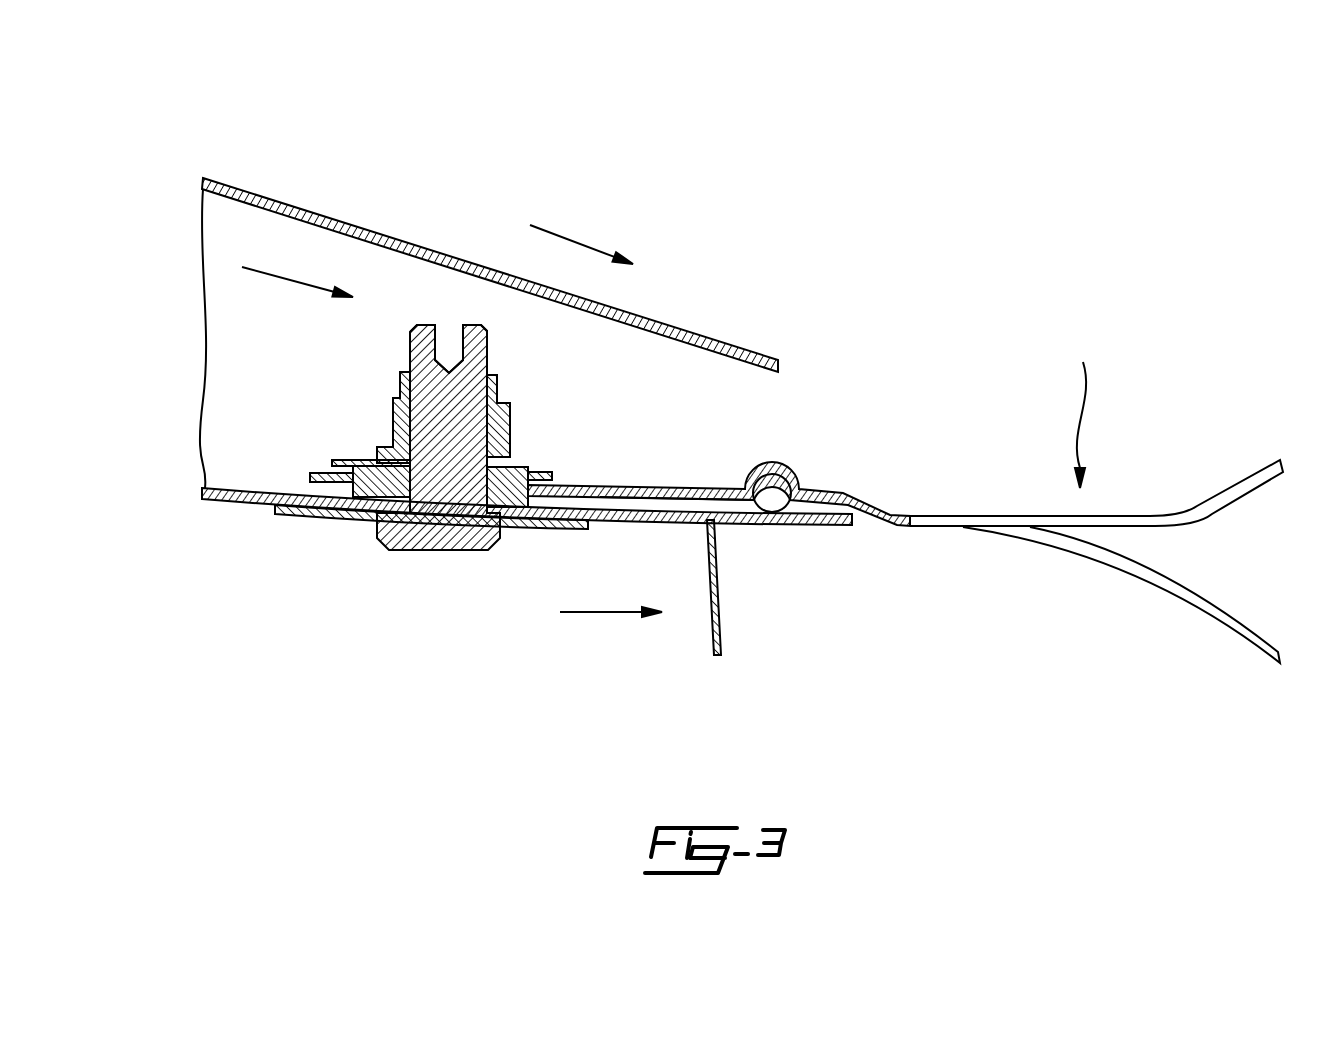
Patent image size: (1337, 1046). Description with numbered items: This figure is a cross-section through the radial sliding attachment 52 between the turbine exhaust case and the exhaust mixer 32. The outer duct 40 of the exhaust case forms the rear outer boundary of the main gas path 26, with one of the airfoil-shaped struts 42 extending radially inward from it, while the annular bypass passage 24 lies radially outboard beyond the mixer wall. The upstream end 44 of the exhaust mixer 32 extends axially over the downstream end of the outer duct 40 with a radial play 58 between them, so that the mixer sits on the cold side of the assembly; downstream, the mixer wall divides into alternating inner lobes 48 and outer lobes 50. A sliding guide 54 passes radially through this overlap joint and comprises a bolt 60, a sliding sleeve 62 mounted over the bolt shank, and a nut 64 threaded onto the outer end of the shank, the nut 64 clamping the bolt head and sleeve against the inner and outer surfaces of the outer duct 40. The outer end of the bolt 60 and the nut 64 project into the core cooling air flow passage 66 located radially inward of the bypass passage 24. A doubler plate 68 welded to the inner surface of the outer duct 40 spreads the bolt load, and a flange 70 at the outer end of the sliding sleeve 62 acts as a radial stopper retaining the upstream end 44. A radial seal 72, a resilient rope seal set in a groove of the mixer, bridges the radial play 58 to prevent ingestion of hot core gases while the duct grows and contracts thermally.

The annular bypass passage 24 is at (452, 198).
The main gas path 26 is at (485, 609).
The exhaust mixer 32 is at (1082, 410).
The outer duct 40 is at (227, 497).
The struts 42 is at (708, 617).
The upstream end 44 is at (593, 488).
The inner lobes 48 is at (1210, 605).
The outer lobes 50 is at (1252, 487).
The radial sliding attachment 52 is at (399, 581).
The sliding guide 54 is at (426, 438).
The radial play 58 is at (677, 500).
The bolt 60 is at (488, 347).
The sliding sleeve 62 is at (520, 471).
The nut 64 is at (392, 405).
The core cooling air flow passage 66 is at (260, 320).
The doubler plate 68 is at (313, 512).
The flange 70 is at (332, 462).
The radial seal 72 is at (777, 492).